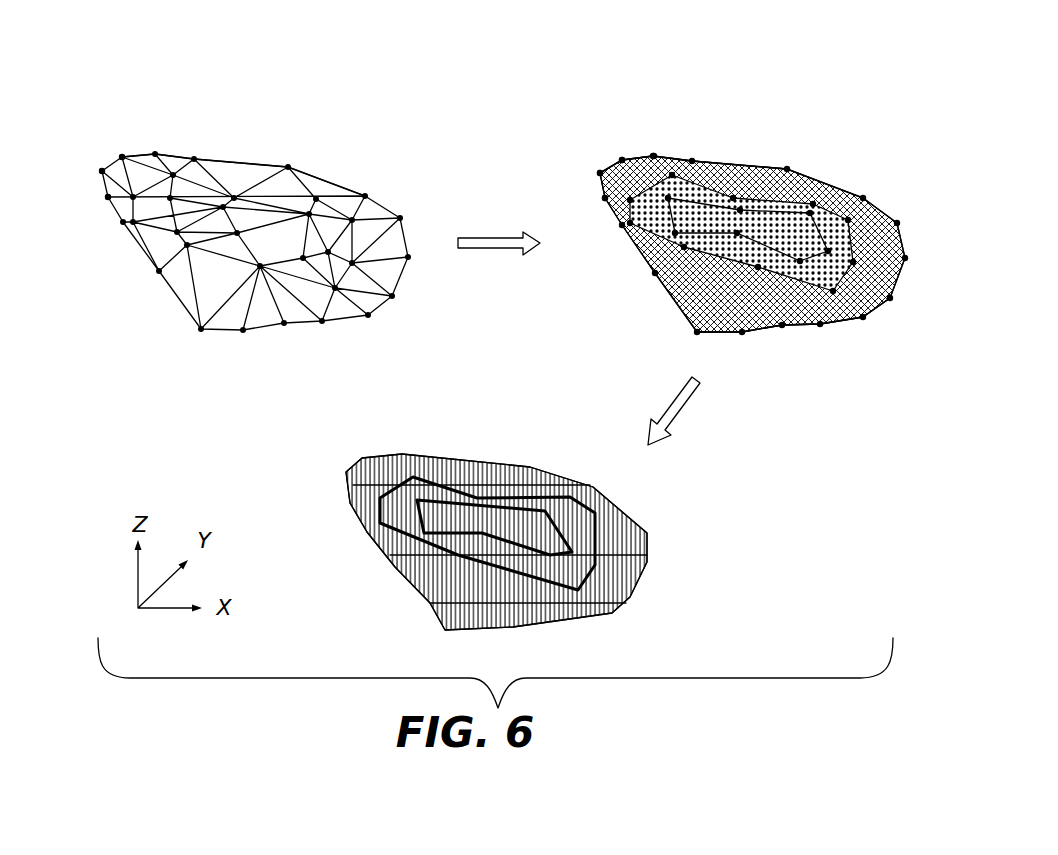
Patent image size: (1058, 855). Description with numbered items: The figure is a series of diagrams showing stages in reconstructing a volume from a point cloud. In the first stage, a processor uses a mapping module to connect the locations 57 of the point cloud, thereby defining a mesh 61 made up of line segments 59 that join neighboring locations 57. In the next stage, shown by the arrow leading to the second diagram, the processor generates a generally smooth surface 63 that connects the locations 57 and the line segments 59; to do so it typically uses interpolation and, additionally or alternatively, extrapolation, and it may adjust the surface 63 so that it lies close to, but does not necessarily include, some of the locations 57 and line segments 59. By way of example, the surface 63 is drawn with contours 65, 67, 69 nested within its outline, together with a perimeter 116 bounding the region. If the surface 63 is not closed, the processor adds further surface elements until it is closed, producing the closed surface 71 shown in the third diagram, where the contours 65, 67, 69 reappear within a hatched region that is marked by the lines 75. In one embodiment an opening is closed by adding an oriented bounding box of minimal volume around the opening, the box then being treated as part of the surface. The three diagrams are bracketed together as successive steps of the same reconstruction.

The locations 57 is at (102, 171).
The line segments 59 is at (157, 152).
The mesh 61 is at (139, 359).
The surface 63 is at (889, 102).
The contour 65 is at (708, 233).
The contour 67 is at (842, 280).
The contour 69 is at (802, 327).
The closed surface 71 is at (497, 506).
The toolpath lines 75 is at (575, 495).
The perimeter 116 is at (903, 237).